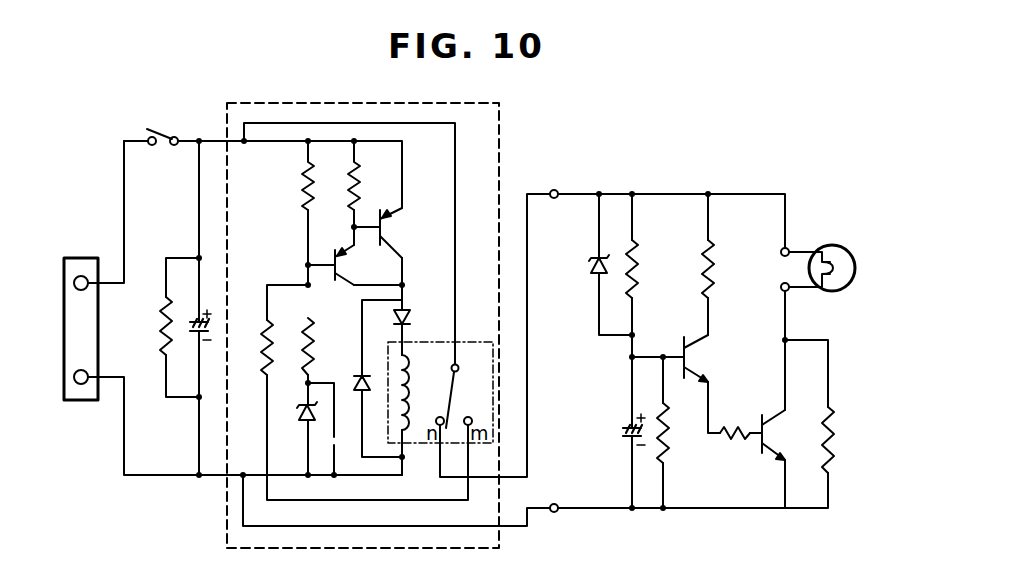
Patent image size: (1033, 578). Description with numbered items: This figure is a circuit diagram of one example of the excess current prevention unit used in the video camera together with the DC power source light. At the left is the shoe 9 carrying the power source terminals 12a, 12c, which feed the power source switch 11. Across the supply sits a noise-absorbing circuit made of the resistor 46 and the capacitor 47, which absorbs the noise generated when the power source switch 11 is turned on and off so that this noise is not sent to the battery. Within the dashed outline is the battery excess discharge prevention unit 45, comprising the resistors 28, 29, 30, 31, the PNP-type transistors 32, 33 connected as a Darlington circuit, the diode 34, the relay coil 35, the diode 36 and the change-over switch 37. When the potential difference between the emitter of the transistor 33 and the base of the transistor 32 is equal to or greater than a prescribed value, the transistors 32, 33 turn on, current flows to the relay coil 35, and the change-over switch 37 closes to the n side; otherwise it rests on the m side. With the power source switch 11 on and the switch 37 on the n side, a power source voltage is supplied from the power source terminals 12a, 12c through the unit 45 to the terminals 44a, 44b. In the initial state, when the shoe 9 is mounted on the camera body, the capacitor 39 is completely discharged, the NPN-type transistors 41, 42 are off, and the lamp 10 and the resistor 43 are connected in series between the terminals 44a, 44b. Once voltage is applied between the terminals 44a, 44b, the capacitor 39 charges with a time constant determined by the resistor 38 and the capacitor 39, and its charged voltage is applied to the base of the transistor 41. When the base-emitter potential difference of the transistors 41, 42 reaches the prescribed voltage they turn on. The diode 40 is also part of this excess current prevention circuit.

The shoe 9 is at (64, 330).
The lamp 10 is at (830, 245).
The power source switch 11 is at (165, 127).
The power source terminal 12a is at (81, 276).
The power source terminal 12c is at (82, 398).
The resistor 28 is at (262, 347).
The resistor 29 is at (300, 194).
The resistor 30 is at (302, 345).
The resistor 31 is at (360, 195).
The PNP-type transistor 32 is at (343, 252).
The PNP-type transistor 33 is at (392, 220).
The diode 34 is at (412, 323).
The relay coil 35 is at (412, 410).
The diode 36 is at (357, 382).
The change-over switch 37 is at (458, 390).
The resistor 38 is at (634, 242).
The capacitor 39 is at (626, 423).
The diode 40 is at (590, 265).
The NPN-type transistor 41 is at (700, 352).
The NPN-type transistor 42 is at (780, 433).
The resistor 43 is at (832, 408).
The terminal 44a is at (556, 189).
The terminal 44b is at (556, 503).
The battery excess discharge prevention unit 45 is at (503, 117).
The resistor 46 is at (160, 324).
The capacitor 47 is at (198, 345).